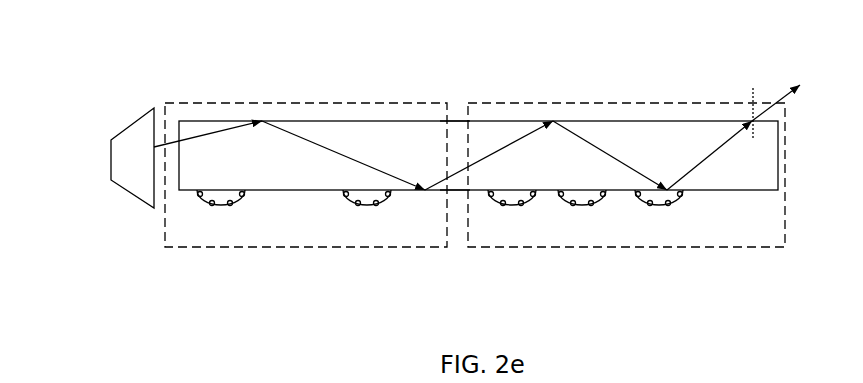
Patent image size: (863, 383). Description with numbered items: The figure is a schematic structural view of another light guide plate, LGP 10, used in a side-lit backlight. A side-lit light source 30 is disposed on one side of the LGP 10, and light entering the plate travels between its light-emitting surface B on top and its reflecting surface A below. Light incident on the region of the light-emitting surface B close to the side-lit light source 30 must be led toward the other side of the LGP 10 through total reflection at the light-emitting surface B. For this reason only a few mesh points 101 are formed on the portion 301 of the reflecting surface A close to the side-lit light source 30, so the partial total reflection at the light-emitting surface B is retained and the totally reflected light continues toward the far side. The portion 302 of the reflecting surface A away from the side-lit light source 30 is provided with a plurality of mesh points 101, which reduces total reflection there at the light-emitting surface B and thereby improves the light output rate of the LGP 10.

The LGP 10 is at (762, 160).
The side-lit light source 30 is at (132, 173).
The mesh points 101 is at (585, 195).
The portion of reflecting surface of LGP close to side-lit light source 301 is at (300, 225).
The portion of reflecting surface of LGP away from side-lit light source 302 is at (680, 228).
The reflecting surface A is at (463, 190).
The light-emitting surface B is at (450, 120).